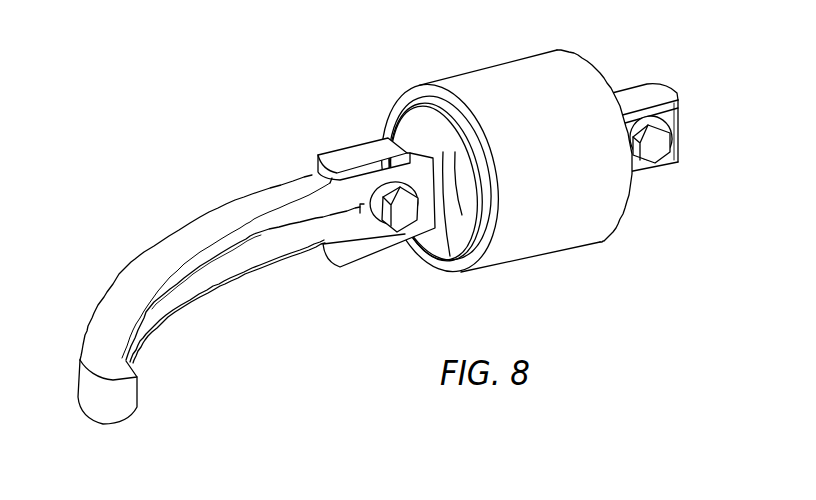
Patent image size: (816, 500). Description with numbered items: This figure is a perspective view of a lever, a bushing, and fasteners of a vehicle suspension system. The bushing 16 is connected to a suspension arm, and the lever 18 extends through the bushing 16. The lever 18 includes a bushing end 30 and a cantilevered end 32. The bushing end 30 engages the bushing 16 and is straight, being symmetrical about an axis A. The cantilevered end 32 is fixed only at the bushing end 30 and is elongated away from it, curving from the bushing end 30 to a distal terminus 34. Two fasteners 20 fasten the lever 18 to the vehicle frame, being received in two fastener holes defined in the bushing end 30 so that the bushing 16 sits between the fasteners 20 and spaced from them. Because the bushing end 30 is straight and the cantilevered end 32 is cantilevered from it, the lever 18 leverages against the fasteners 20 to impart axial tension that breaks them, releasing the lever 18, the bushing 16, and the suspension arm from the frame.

The bushing 16 is at (503, 74).
The lever 18 is at (120, 243).
The fastener 20 is at (407, 213).
The bushing end 30 is at (635, 72).
The cantilevered end 32 is at (66, 352).
The distal terminus 34 is at (123, 425).
The axis A is at (681, 127).